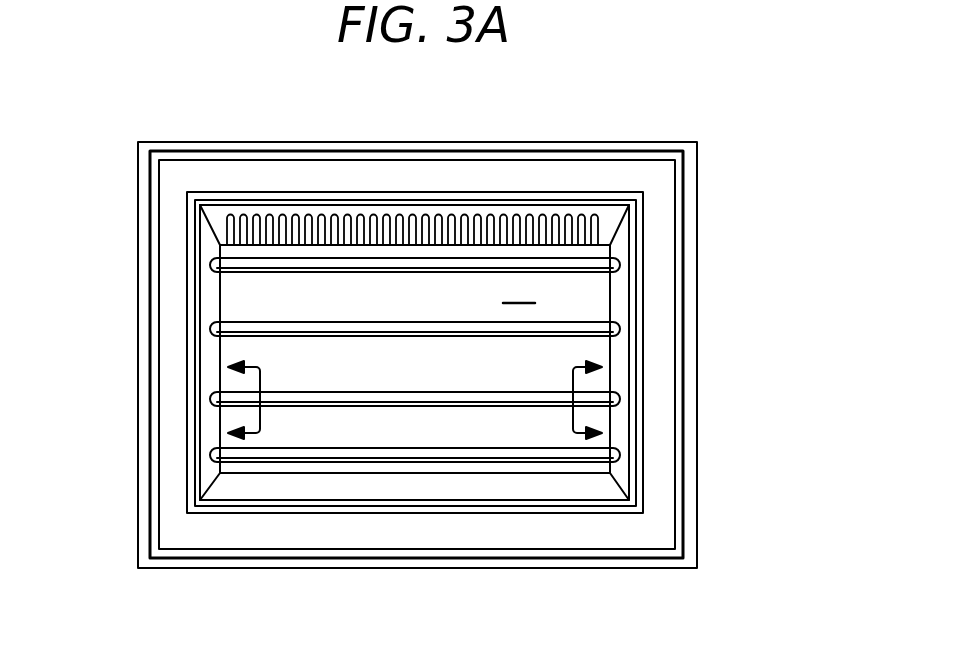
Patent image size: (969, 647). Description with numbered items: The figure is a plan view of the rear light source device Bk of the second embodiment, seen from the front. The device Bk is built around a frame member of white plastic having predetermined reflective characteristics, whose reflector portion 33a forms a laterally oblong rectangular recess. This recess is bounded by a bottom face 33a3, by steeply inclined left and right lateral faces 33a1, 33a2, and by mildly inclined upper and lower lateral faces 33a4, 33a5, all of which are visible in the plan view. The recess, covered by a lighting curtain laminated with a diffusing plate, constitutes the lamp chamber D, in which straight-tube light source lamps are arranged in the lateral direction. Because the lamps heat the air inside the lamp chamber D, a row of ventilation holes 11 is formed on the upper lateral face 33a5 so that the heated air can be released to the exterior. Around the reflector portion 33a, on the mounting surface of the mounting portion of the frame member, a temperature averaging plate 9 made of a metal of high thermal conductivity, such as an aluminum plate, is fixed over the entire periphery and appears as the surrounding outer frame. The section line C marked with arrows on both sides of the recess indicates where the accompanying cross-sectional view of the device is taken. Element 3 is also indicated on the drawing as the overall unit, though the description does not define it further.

The image forming unit 3 is at (137, 218).
The rear light source device Bk is at (131, 456).
The temperature averaging plate 9 is at (250, 170).
The ventilation holes 11 is at (610, 222).
The reflector portion 33a is at (430, 290).
The left lateral face 33a1 is at (210, 294).
The right lateral face 33a2 is at (623, 378).
The bottom face 33a3 is at (346, 285).
The lower lateral face 33a4 is at (478, 492).
The upper lateral face 33a5 is at (545, 212).
The lamp chamber D is at (519, 291).
The line C— C is at (415, 403).